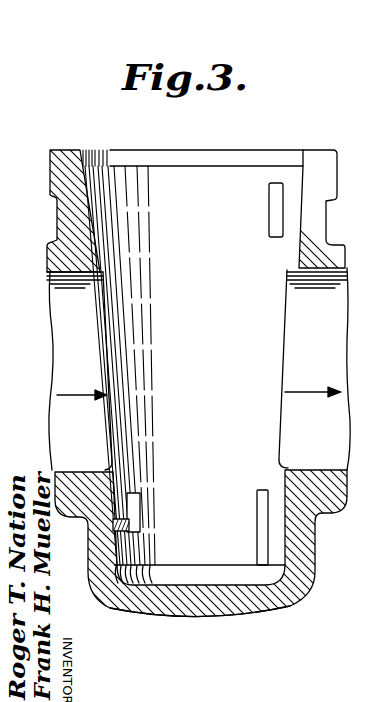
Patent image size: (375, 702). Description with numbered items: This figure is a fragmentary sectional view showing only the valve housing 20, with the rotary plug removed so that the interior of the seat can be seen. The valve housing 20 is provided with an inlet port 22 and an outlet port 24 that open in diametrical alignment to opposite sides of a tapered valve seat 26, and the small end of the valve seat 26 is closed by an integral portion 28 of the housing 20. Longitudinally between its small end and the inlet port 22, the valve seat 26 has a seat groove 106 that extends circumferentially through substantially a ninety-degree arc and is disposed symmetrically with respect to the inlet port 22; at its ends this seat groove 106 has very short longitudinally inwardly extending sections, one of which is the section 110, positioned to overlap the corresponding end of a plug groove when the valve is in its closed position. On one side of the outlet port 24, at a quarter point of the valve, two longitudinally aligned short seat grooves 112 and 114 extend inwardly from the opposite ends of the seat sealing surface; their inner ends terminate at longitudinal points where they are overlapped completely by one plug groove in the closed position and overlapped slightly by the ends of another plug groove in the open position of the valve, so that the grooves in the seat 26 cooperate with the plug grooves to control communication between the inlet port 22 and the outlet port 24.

The valve housing 20 is at (50, 185).
The inlet port 22 is at (107, 468).
The outlet port 24 is at (331, 468).
The tapered valve seat 26 is at (236, 183).
The integral portion 28 is at (257, 610).
The seat groove 106 is at (138, 538).
The longitudinally inwardly extending section 110 is at (133, 502).
The short seat groove 112 is at (271, 211).
The short seat groove 114 is at (260, 512).